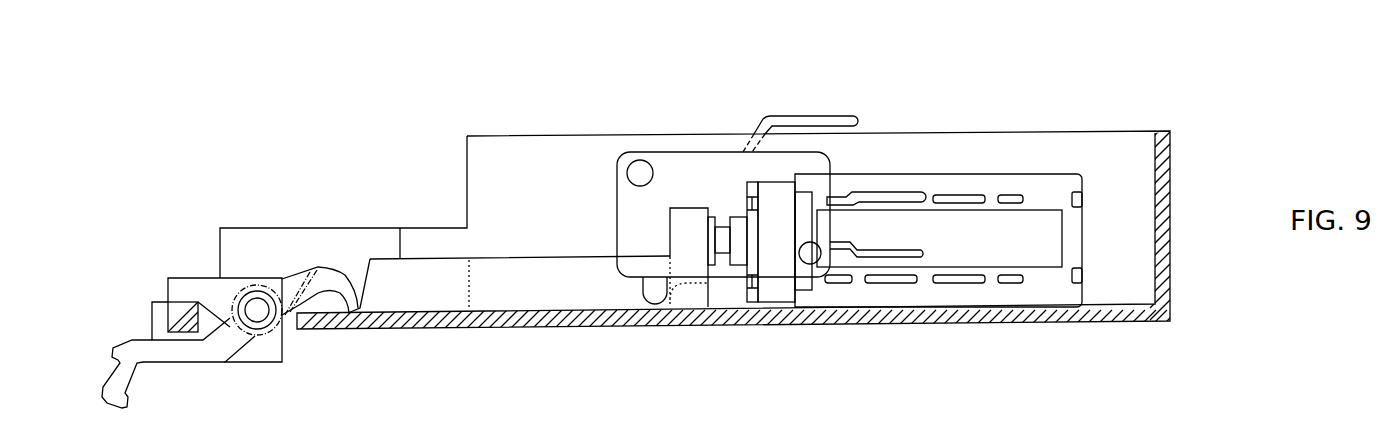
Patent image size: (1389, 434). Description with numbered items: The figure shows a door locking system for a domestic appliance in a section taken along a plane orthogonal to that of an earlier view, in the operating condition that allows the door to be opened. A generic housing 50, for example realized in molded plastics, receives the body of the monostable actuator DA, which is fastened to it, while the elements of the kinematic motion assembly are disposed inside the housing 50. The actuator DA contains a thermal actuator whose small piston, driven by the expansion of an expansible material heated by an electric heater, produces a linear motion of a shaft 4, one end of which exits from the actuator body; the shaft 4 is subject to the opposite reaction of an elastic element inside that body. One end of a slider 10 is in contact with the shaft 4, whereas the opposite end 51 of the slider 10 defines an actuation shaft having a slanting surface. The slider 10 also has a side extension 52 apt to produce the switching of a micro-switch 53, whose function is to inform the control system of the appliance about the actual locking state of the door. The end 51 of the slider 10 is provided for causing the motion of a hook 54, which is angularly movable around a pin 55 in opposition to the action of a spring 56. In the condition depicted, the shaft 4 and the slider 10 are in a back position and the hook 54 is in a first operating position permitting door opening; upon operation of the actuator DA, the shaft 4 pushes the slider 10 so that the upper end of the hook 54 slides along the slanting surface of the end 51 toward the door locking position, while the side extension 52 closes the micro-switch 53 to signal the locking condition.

The housing 50 is at (1170, 265).
The slider 10 is at (543, 293).
The spring 56 is at (197, 302).
The pin 55 is at (258, 315).
The end of the slider 51 is at (360, 277).
The hook 54 is at (332, 277).
The micro-switch 53 is at (700, 152).
The side extension 52 is at (685, 301).
The shaft 4 is at (738, 255).
The monostable actuator DA is at (1040, 160).